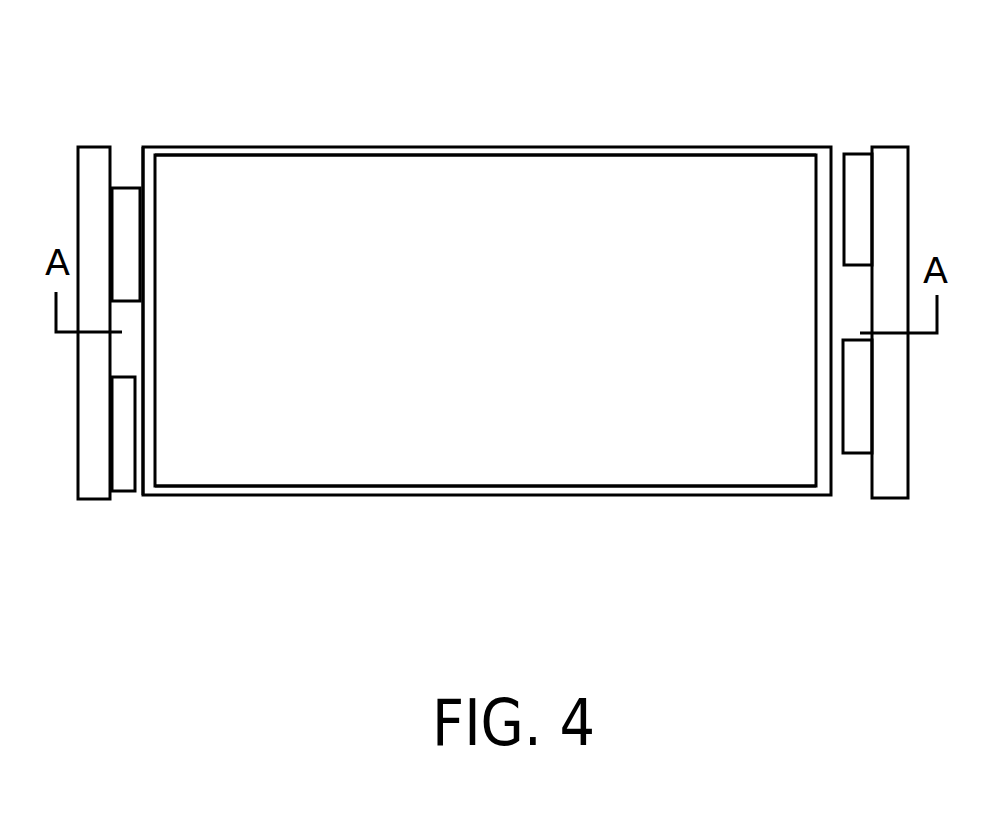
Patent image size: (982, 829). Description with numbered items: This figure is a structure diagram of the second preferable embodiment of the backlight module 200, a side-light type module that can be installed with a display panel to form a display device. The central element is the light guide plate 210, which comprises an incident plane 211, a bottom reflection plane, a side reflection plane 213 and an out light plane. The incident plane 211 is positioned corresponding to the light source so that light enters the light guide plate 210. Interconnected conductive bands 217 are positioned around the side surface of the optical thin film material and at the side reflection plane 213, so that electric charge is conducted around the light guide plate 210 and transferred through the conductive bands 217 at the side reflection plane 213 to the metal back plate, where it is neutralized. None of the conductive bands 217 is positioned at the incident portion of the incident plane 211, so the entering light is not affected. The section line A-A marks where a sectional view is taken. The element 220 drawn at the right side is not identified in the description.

The backlight module 200 is at (314, 144).
The light guide plate 210 is at (445, 212).
The incident plane 211 is at (149, 178).
The side reflection plane 213 is at (522, 497).
The conductive bands 217 is at (543, 155).
The side mounting member 220 is at (895, 182).